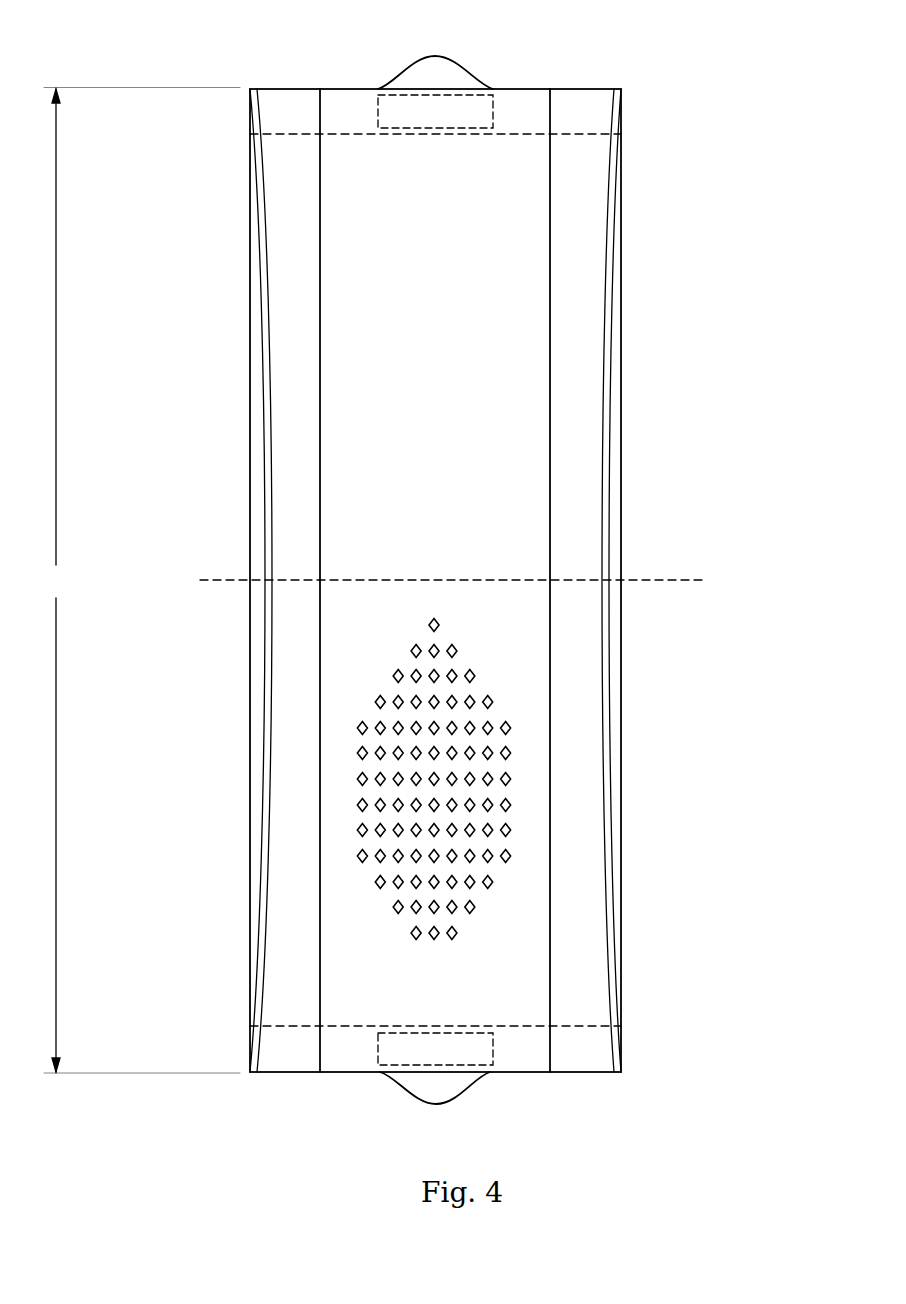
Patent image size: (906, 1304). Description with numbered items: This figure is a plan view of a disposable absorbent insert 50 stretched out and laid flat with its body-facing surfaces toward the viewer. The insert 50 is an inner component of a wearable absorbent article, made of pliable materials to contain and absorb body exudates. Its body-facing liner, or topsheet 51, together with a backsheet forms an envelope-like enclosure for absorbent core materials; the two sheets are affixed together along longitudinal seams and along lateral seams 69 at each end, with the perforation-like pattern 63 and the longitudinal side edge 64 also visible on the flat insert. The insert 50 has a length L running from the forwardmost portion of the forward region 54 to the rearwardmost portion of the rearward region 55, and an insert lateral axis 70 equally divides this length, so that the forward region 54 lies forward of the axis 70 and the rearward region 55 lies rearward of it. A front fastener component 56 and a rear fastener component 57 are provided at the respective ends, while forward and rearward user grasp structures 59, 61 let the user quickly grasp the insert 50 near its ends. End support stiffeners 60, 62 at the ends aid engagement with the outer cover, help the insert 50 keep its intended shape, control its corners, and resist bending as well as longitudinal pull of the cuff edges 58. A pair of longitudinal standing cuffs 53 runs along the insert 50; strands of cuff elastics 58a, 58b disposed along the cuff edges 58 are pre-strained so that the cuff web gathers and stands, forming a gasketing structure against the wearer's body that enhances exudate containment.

The disposable absorbent insert 50 is at (705, 478).
The topsheet 51 is at (522, 440).
The standing cuffs 53 is at (293, 493).
The forward region 54 is at (215, 338).
The rearward region 55 is at (647, 819).
The front fastener component 56 is at (493, 110).
The rear fastener component 57 is at (465, 1056).
The cuff edges 58 is at (268, 633).
The cuff elastics 58a is at (264, 667).
The cuff elastics 58b is at (270, 697).
The forward user grasp structure 59 is at (453, 72).
The end support stiffener 60 is at (518, 134).
The rearward user grasp structure 61 is at (423, 1098).
The end support stiffener 62 is at (503, 1027).
The apertures 63 is at (507, 753).
The longitudinal side edge 64 is at (622, 364).
The lateral seams 69 is at (305, 118).
The insert lateral axis 70 is at (468, 579).
The length L is at (142, 581).